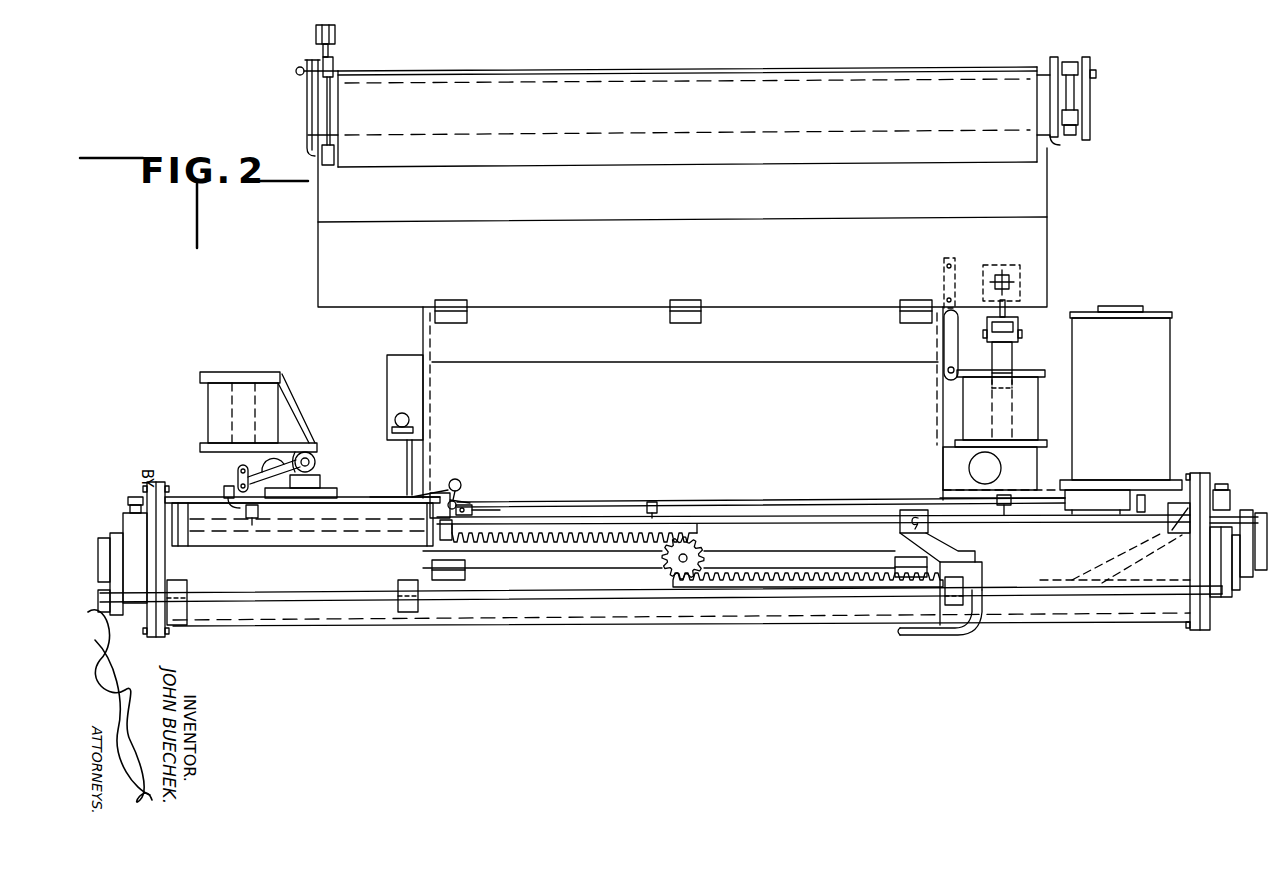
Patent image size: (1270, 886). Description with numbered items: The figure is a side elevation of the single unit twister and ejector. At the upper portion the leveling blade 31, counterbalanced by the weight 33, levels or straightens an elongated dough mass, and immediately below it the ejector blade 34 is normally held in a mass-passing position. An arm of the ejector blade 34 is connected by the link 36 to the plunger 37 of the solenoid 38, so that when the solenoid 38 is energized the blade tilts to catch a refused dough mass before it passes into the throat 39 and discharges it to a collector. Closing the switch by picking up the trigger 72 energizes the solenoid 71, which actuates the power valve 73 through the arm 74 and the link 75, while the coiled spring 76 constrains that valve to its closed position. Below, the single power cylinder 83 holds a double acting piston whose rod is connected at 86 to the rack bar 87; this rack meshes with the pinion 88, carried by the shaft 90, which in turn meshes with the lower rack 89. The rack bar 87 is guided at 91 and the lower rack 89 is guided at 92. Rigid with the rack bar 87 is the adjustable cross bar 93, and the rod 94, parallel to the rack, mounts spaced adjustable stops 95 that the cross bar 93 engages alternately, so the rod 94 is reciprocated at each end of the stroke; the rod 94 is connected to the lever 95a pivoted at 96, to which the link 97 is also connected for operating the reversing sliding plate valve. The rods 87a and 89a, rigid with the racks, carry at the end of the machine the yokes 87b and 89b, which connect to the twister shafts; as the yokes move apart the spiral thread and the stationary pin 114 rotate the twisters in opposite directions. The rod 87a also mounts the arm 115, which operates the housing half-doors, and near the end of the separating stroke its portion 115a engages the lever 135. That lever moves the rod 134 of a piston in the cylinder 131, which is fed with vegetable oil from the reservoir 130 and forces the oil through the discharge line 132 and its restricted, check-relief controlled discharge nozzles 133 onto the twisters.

The leveling blade 31 is at (741, 157).
The counterbalance weight 33 is at (337, 35).
The ejector blade 34 is at (1028, 246).
The link 36 is at (1008, 311).
The plunger 37 is at (1006, 357).
The solenoid 38 is at (1030, 405).
The throat 39 is at (462, 333).
The solenoid 71 is at (210, 411).
The trigger 72 is at (232, 463).
The power valve 73 is at (322, 478).
The arm 74 is at (262, 548).
The link 75 is at (226, 485).
The coiled spring 76 is at (311, 452).
The power cylinder 83 is at (380, 547).
The connection 86 is at (450, 533).
The rack bar 87 is at (548, 540).
The rod 87a is at (793, 520).
The yoke 87b is at (1248, 572).
The pinion 88 is at (678, 568).
The lower rack 89 is at (806, 588).
The rod 89a is at (856, 590).
The yoke 89b is at (110, 595).
The shaft 90 is at (702, 556).
The guide 91 is at (1177, 503).
The guide 92 is at (180, 612).
The adjustable cross bar 93 is at (490, 503).
The rod 94 is at (575, 500).
The adjustable stops 95 is at (650, 500).
The lever 95a is at (462, 492).
The pivot 96 is at (468, 497).
The link 97 is at (442, 490).
The stationary pin 114 is at (128, 510).
The arm 115 is at (898, 530).
The portion of arm 115a is at (922, 525).
The reservoir 130 is at (1158, 372).
The cylinder 131 is at (1095, 503).
The discharge line 132 is at (337, 522).
The discharge nozzles 133 is at (273, 533).
The rod 134 is at (1133, 488).
The lever 135 is at (1143, 493).